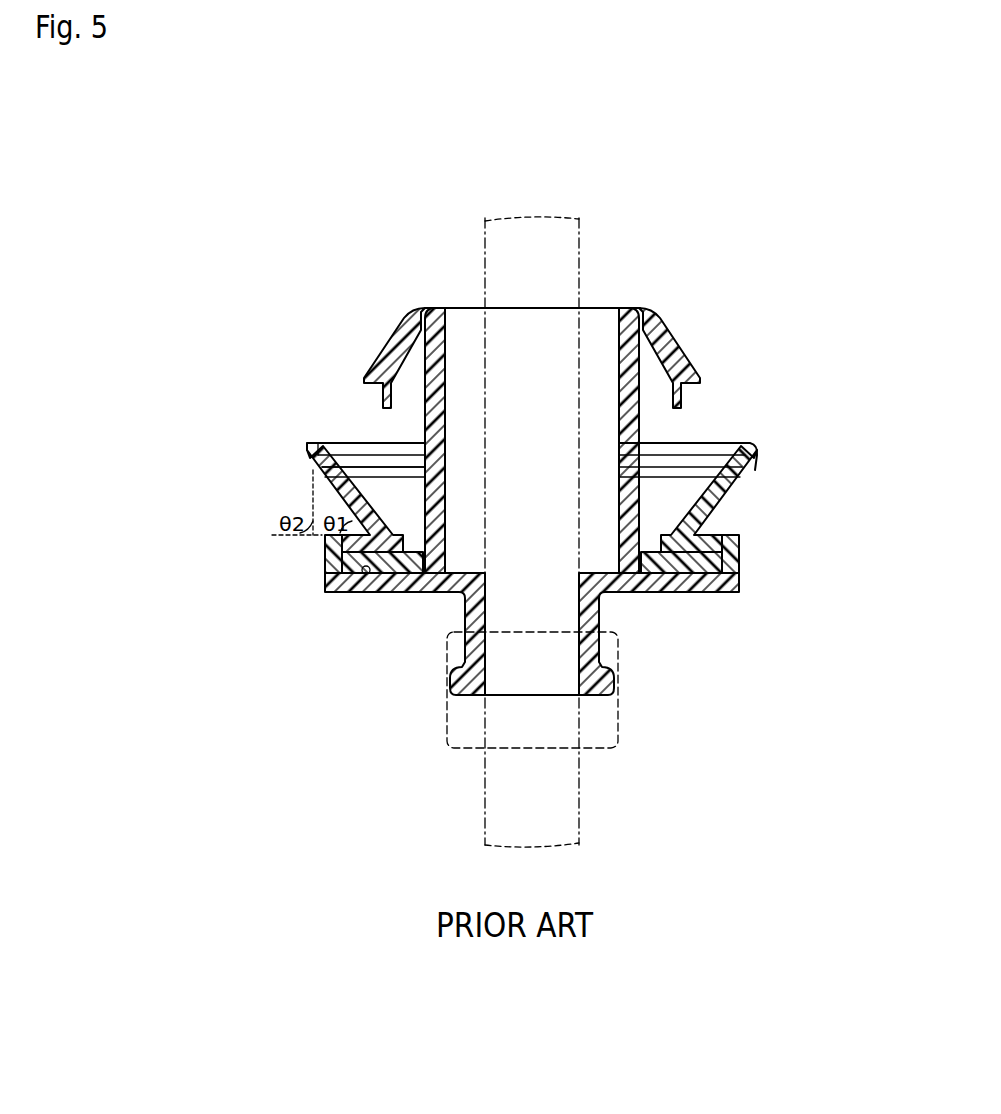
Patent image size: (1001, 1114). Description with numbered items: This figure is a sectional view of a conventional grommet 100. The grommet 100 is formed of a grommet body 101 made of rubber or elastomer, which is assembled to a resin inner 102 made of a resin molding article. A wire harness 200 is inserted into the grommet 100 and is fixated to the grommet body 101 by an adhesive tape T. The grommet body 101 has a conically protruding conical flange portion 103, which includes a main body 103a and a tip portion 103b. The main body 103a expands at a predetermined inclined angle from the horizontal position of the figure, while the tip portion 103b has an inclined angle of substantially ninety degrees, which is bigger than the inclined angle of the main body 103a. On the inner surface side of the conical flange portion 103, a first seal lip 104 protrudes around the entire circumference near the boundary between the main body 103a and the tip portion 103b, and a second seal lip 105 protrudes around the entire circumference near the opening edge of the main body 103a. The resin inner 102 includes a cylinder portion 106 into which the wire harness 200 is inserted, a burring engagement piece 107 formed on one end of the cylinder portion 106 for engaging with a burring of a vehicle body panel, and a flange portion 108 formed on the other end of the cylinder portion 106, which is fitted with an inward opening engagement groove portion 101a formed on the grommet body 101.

The grommet 100 is at (668, 220).
The grommet body 101 is at (690, 604).
The inward opening engagement groove portion 101a is at (365, 575).
The resin inner 102 is at (702, 343).
The conical flange portion 103 is at (446, 495).
The main body 103a is at (313, 486).
The tip portion 103b is at (305, 446).
The first seal lip 104 is at (342, 464).
The second seal lip 105 is at (325, 447).
The cylinder portion 106 is at (420, 368).
The burring engagement piece 107 is at (657, 327).
The flange portion 108 is at (708, 560).
The wire harness 200 is at (580, 797).
The adhesive tape T is at (620, 720).